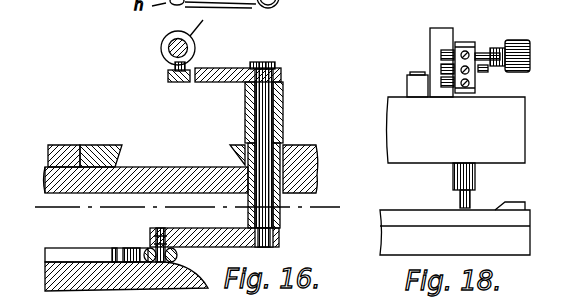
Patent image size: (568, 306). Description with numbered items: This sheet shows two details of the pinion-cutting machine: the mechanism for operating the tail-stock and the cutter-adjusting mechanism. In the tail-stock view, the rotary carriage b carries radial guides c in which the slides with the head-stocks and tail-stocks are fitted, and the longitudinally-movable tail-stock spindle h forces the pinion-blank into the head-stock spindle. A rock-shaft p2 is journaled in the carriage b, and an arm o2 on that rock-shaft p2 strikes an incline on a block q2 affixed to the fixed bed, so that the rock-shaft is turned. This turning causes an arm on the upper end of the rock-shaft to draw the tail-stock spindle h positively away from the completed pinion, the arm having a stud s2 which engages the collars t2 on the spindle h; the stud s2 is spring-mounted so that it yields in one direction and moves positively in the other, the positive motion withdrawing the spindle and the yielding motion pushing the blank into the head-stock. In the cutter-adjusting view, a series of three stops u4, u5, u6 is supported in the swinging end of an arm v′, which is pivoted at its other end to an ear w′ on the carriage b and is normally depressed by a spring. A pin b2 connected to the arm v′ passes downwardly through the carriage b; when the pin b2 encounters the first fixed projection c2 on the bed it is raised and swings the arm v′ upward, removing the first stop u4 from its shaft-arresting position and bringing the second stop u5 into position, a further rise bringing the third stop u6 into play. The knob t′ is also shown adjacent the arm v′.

In FIG. 16, the collar t2 is at (166, 34).
In FIG. 16, the tail-stock spindle h is at (200, 20).
In FIG. 16, the stud s2 is at (170, 67).
In FIG. 16, the rock-shaft p2 is at (228, 70).
In FIG. 16, the arm o2 is at (224, 248).
In FIG. 16, the radial guide c is at (181, 167).
In FIG. 16, the rotary carriage b is at (52, 176).
In FIG. 18, the rotary carriage b is at (456, 130).
In FIG. 16, the block q2 is at (152, 251).
In FIG. 18, the ear w′ is at (438, 38).
In FIG. 18, the arm v′ is at (462, 52).
In FIG. 18, the first stop u4 is at (440, 54).
In FIG. 18, the second stop u5 is at (440, 69).
In FIG. 18, the third stop u6 is at (440, 83).
In FIG. 18, the knob t′ is at (504, 40).
In FIG. 18, the pin b2 is at (476, 172).
In FIG. 18, the first projection c2 is at (526, 203).